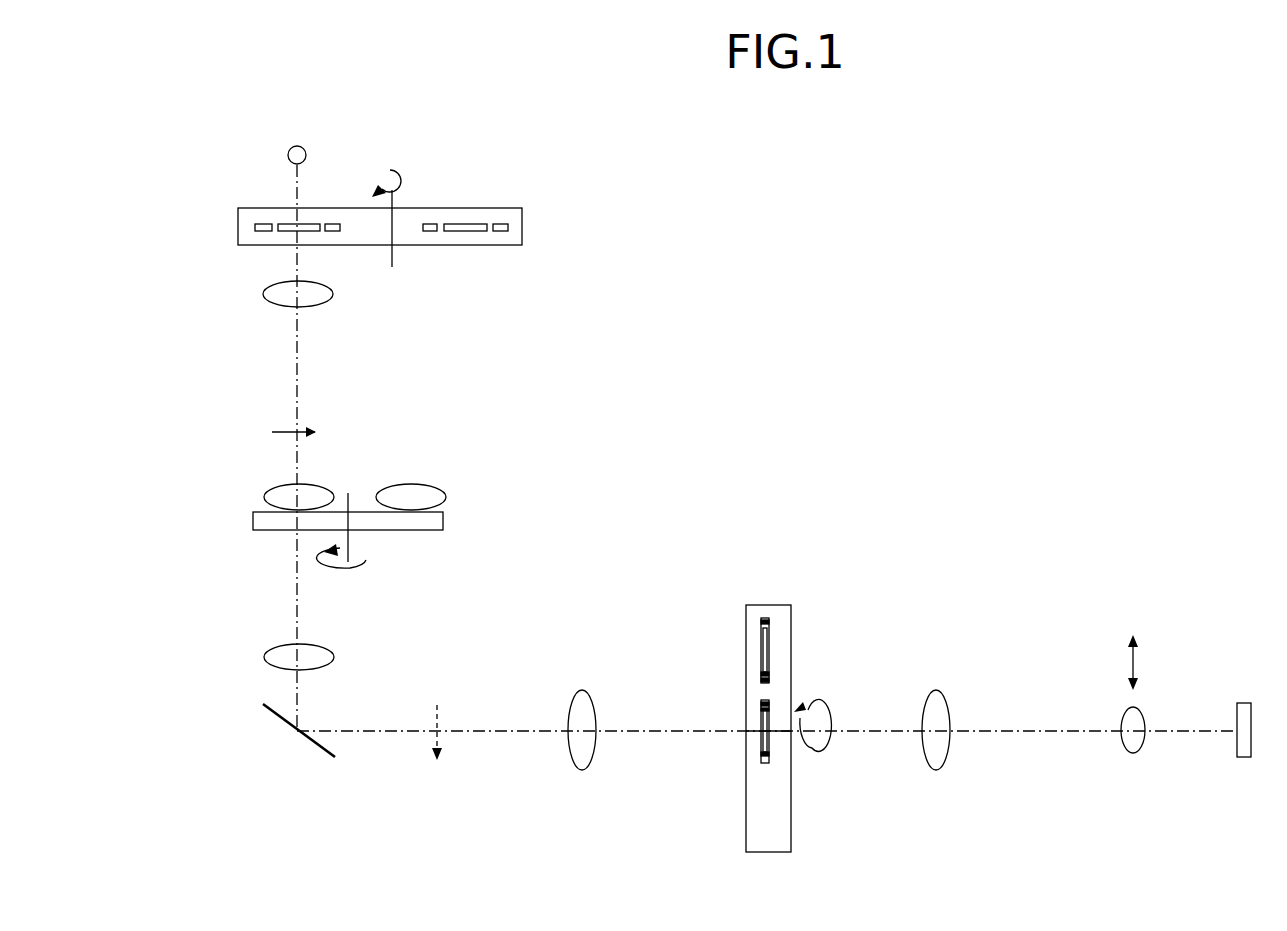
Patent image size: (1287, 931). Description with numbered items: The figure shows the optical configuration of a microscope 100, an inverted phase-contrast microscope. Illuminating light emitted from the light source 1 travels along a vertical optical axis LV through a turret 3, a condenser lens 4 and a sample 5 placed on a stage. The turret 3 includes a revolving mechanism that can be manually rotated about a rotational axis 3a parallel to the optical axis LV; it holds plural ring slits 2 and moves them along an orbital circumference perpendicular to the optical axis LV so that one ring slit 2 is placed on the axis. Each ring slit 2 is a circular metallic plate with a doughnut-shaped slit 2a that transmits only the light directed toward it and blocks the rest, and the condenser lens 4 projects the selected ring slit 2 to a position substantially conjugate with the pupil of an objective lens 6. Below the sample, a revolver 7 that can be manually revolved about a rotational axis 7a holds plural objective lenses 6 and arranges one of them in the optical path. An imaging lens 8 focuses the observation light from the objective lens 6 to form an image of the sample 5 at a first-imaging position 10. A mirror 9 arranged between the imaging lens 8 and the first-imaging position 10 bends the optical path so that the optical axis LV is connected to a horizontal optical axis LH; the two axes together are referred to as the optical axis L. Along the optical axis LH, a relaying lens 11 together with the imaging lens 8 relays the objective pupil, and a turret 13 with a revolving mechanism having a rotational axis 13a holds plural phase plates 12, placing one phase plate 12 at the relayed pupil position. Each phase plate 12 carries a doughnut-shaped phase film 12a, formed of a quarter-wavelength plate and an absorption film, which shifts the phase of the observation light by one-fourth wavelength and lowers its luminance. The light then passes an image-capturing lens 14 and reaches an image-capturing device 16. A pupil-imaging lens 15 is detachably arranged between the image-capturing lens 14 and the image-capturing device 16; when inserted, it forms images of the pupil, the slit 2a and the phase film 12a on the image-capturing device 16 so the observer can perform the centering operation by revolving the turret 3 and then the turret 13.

The microscope 100 is at (860, 308).
The light source 1 is at (297, 146).
The ring slit 2 is at (298, 225).
The slit 2a is at (262, 238).
The turret 3 is at (523, 227).
The rotational axis 3a is at (393, 253).
The condenser lens 4 is at (334, 294).
The sample 5 is at (270, 430).
The objective lens 6 is at (325, 486).
The revolver 7 is at (444, 520).
The rotational axis 7a is at (350, 540).
The imaging lens 8 is at (264, 657).
The mirror 9 is at (318, 752).
The first-imaging position 10 is at (440, 735).
The relaying lens 11 is at (582, 770).
The phase plate 12 is at (760, 647).
The phase film 12a is at (770, 755).
The turret 13 is at (768, 854).
The rotational axis 13a is at (756, 728).
The image-capturing lens 14 is at (936, 773).
The pupil-imaging lens 15 is at (1133, 755).
The image-capturing device 16 is at (1244, 760).
The optical axis LV is at (300, 612).
The optical axis LH is at (372, 728).
The optical axis L is at (405, 598).